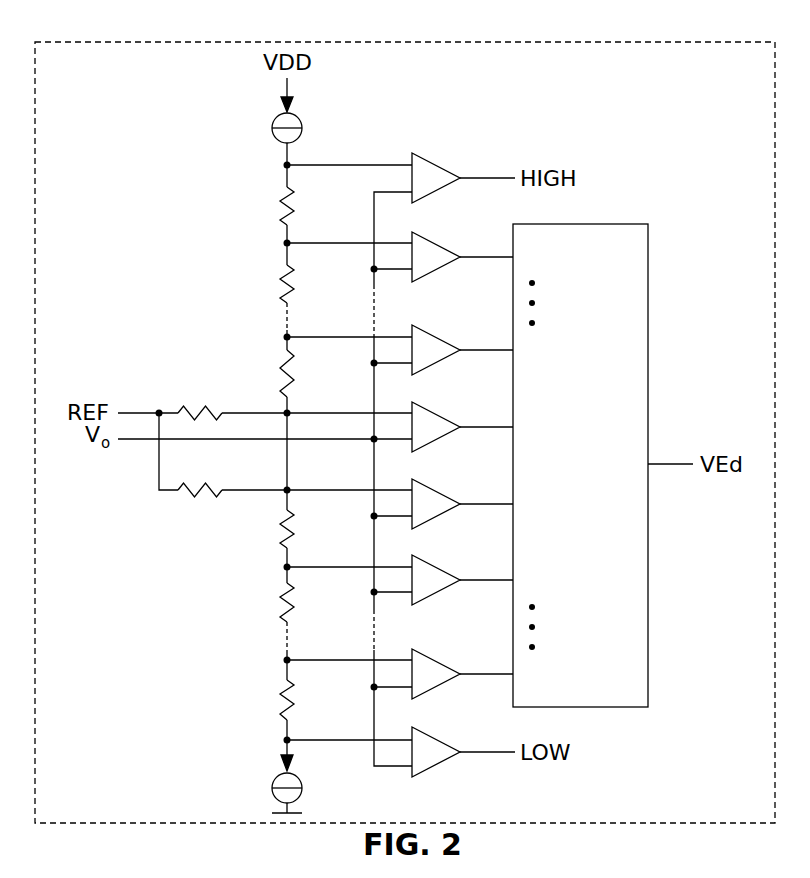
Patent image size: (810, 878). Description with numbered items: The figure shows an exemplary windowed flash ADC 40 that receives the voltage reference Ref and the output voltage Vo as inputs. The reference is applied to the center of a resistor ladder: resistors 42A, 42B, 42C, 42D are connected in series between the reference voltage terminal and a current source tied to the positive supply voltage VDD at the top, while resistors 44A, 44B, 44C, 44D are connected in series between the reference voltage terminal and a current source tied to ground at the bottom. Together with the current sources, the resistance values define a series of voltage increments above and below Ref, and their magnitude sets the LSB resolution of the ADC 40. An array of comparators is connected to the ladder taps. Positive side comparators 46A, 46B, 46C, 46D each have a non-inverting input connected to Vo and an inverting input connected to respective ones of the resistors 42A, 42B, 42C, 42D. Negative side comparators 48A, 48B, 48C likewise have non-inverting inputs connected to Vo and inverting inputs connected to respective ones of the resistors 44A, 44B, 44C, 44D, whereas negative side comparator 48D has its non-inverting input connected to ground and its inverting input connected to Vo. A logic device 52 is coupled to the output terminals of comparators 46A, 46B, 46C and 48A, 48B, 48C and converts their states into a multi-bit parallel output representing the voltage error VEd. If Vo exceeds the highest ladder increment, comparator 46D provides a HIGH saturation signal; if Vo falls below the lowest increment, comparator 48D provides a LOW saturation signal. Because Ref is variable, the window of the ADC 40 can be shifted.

The windowed flash ADC 40 is at (86, 41).
The resistor 42A is at (198, 407).
The resistor 42B is at (282, 362).
The resistor 42C is at (282, 270).
The resistor 42D is at (282, 192).
The resistor 44A is at (192, 498).
The resistor 44B is at (284, 545).
The resistor 44C is at (282, 592).
The resistor 44D is at (282, 689).
The positive side comparator 46A is at (437, 415).
The positive side comparator 46B is at (437, 338).
The positive side comparator 46C is at (437, 245).
The positive side comparator 46D is at (437, 166).
The negative side comparator 48A is at (437, 492).
The negative side comparator 48B is at (437, 568).
The negative side comparator 48C is at (437, 662).
The negative side comparator 48D is at (437, 740).
The logic device 52 is at (596, 224).